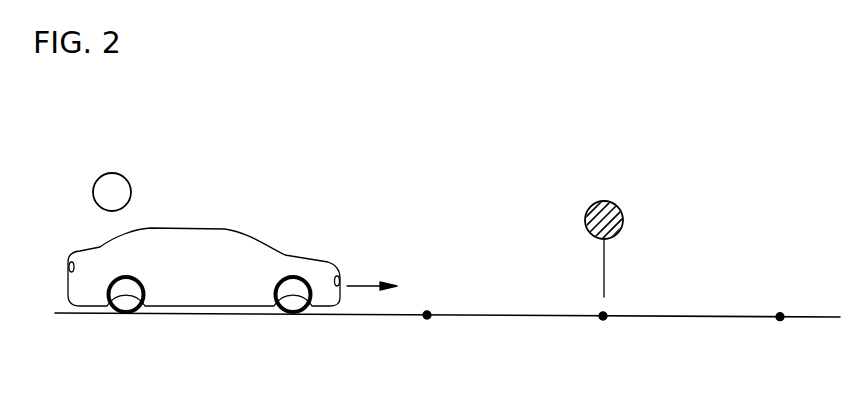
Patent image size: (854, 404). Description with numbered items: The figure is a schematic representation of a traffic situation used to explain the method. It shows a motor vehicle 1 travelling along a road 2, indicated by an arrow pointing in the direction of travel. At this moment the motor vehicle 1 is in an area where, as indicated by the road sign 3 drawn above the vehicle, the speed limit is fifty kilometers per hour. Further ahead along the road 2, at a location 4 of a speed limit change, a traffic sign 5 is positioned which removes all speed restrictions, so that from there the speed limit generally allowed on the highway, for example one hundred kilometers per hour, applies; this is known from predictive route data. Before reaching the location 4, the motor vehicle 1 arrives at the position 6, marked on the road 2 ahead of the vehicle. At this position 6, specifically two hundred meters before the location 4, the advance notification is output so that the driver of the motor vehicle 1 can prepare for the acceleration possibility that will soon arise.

The motor vehicle 1 is at (193, 227).
The road 2 is at (366, 315).
The road sign 3 is at (125, 174).
The location of a speed limit change 4 is at (602, 320).
The traffic sign 5 is at (593, 203).
The position 6 is at (428, 311).